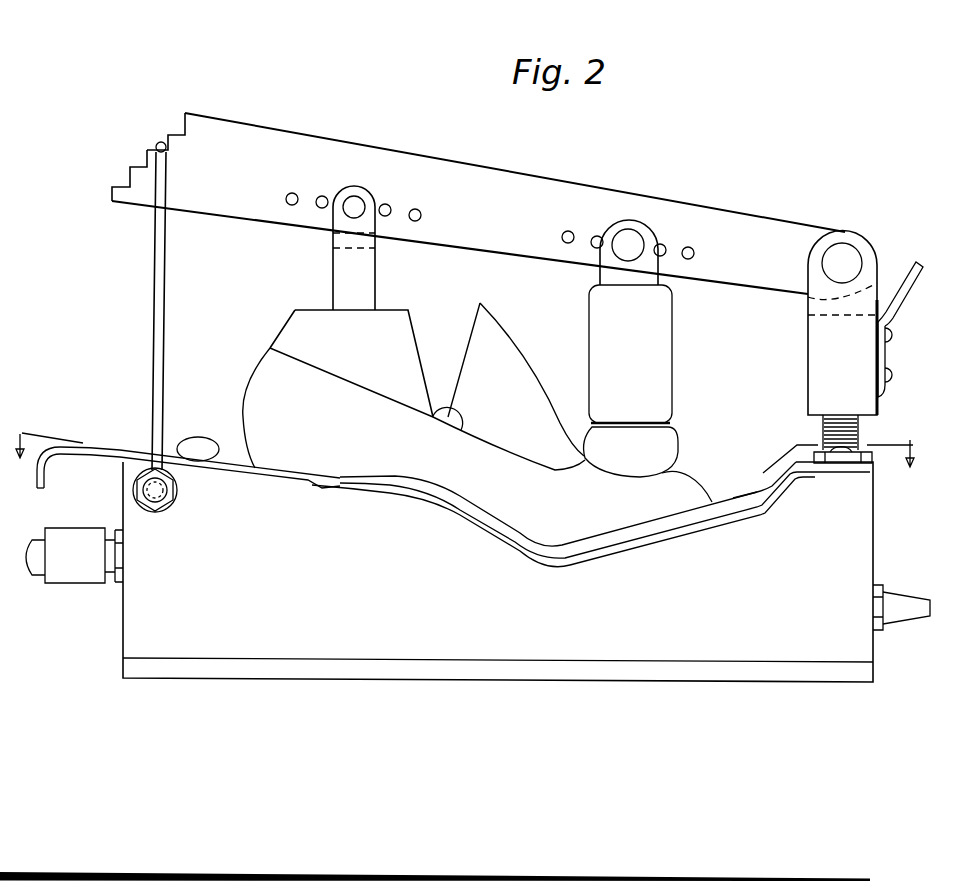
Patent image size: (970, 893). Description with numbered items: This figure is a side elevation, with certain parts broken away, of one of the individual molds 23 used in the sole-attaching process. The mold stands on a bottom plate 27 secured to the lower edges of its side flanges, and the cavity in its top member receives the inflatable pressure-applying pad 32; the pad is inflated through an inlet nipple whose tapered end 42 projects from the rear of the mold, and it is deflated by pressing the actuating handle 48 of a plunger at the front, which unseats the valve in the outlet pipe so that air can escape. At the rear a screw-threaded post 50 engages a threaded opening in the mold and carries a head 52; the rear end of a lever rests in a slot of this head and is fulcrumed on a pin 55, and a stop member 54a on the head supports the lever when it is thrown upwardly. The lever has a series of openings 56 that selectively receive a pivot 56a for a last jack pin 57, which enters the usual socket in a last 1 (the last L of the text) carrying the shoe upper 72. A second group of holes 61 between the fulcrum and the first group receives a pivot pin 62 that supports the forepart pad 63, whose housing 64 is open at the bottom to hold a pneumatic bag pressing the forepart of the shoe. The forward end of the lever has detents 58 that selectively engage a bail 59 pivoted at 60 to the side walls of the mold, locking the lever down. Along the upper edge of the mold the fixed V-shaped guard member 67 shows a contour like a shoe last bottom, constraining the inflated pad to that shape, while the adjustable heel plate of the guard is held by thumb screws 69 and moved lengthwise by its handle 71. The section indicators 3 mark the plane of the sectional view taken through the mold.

The block 1 is at (409, 320).
The section line 3- 3 is at (465, 453).
The individual mold 23 is at (802, 211).
The bottom plate 27 is at (228, 664).
The pressure-applying pad 32 is at (740, 490).
The tapered end 42 is at (900, 603).
The actuating handle 48 is at (32, 538).
The screw-threaded post 50 is at (860, 440).
The head 52 is at (880, 403).
The stop member 54a is at (920, 265).
The pin 55 is at (848, 257).
The openings 56 is at (415, 211).
The pivot 56a is at (356, 204).
The last jack pin 57 is at (367, 284).
The detents 58 is at (132, 183).
The bail 59 is at (158, 142).
The pivot 60 is at (176, 494).
The second group of holes 61 is at (688, 248).
The pivot pin 62 is at (628, 238).
The forepart pad 63 is at (612, 274).
The housing 64 is at (595, 320).
The V-shaped guard member 67 is at (722, 522).
The thumb screws 69 is at (207, 432).
The handle 71 is at (61, 455).
The upper 72 is at (489, 460).